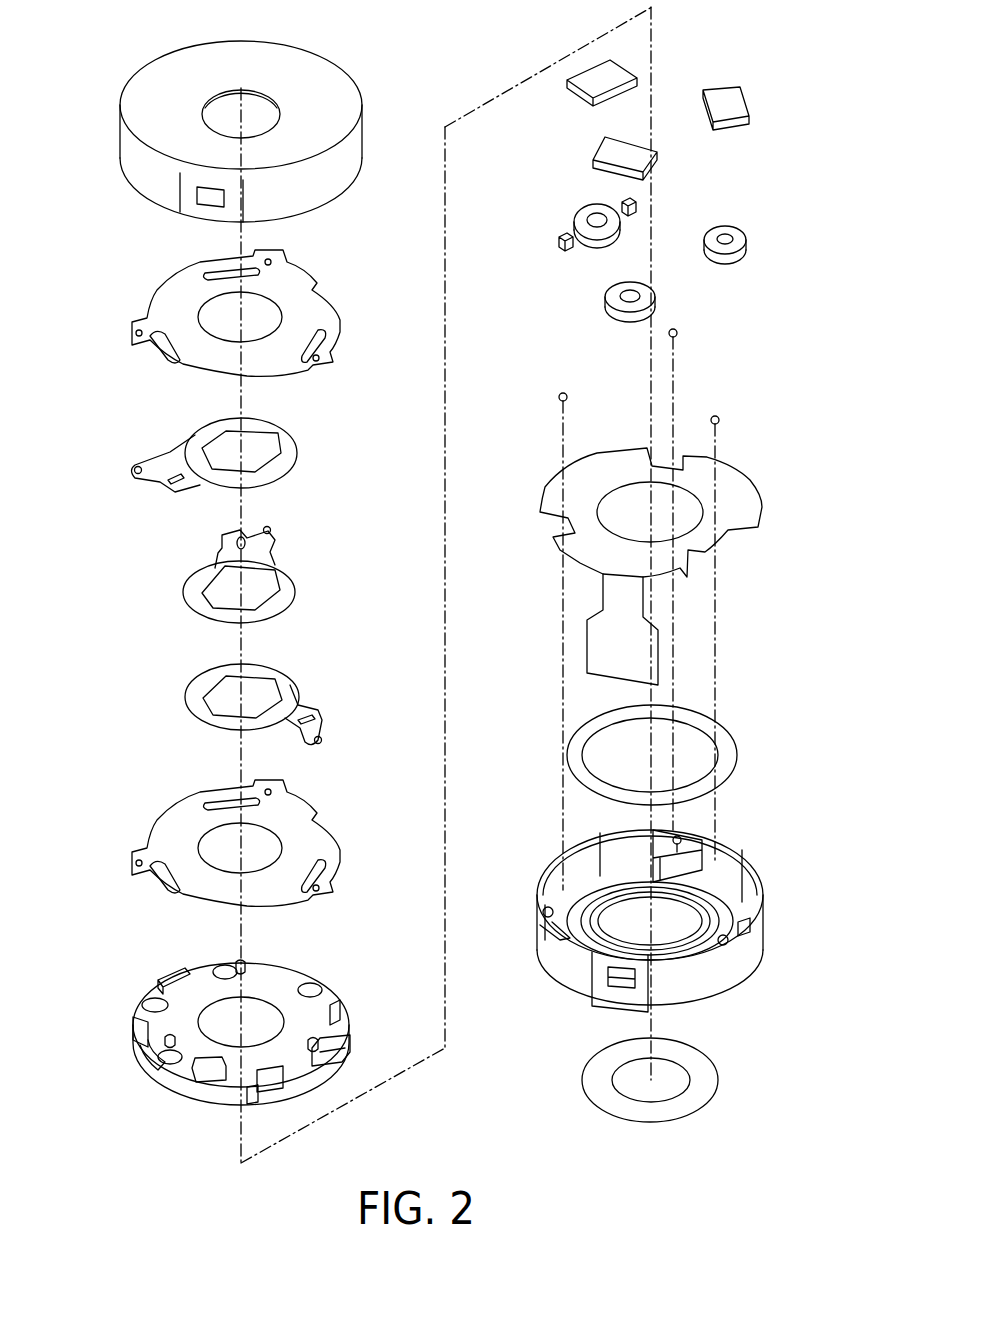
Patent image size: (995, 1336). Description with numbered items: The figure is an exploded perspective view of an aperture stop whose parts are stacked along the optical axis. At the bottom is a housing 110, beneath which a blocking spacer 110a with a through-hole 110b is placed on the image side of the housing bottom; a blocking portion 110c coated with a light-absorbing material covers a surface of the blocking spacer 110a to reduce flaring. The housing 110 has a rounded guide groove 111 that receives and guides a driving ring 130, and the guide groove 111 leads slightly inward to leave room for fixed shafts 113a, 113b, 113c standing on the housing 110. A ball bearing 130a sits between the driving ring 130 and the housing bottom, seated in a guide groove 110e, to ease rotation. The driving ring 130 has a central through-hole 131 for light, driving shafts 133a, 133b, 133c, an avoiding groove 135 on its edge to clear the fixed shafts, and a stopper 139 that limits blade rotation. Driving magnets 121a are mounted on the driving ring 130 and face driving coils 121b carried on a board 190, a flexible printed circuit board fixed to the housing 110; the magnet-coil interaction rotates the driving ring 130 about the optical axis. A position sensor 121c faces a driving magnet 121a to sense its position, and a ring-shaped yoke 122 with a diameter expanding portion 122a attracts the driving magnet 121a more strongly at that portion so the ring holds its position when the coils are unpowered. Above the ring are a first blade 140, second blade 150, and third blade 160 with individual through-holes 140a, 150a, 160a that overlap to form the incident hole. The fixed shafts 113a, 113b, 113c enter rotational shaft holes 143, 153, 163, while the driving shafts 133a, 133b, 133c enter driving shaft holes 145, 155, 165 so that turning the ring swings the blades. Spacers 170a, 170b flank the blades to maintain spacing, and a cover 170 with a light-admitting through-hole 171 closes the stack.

The housing 110 is at (663, 931).
The blocking spacer 110a is at (715, 1082).
The through-hole 110b is at (678, 1075).
The blocking portion 110c is at (750, 905).
The guide groove 110e is at (690, 848).
The guide groove 111 is at (748, 900).
The fixed shaft 113a is at (735, 955).
The fixed shaft 113b is at (640, 858).
The fixed shaft 113c is at (545, 935).
The driving magnet 121a is at (722, 92).
The driving coil 121b is at (585, 222).
The position sensor 121c is at (640, 207).
The yoke 122 is at (703, 738).
The diameter expanding portion 122a is at (738, 752).
The driving ring 130 is at (325, 980).
The ball bearing 130a is at (678, 335).
The through-hole 131 is at (255, 1012).
The driving shaft 133a is at (345, 1050).
The driving shaft 133b is at (236, 965).
The driving shaft 133c is at (140, 1048).
The avoiding groove 135 is at (132, 1040).
The stopper 139 is at (172, 983).
The first blade 140 is at (190, 698).
The through-hole 140a is at (220, 682).
The rotational shaft hole 143 is at (322, 732).
The driving shaft hole 145 is at (308, 712).
The second blade 150 is at (296, 590).
The through-hole 150a is at (262, 592).
The rotational shaft hole 153 is at (269, 527).
The driving shaft hole 155 is at (238, 540).
The third blade 160 is at (298, 450).
The through-hole 160a is at (258, 445).
The rotational shaft hole 163 is at (133, 466).
The driving shaft hole 165 is at (168, 472).
The cover 170 is at (178, 72).
The spacer 170a is at (178, 296).
The spacer 170b is at (180, 825).
The through-hole 171 is at (266, 104).
The board 190 is at (740, 495).